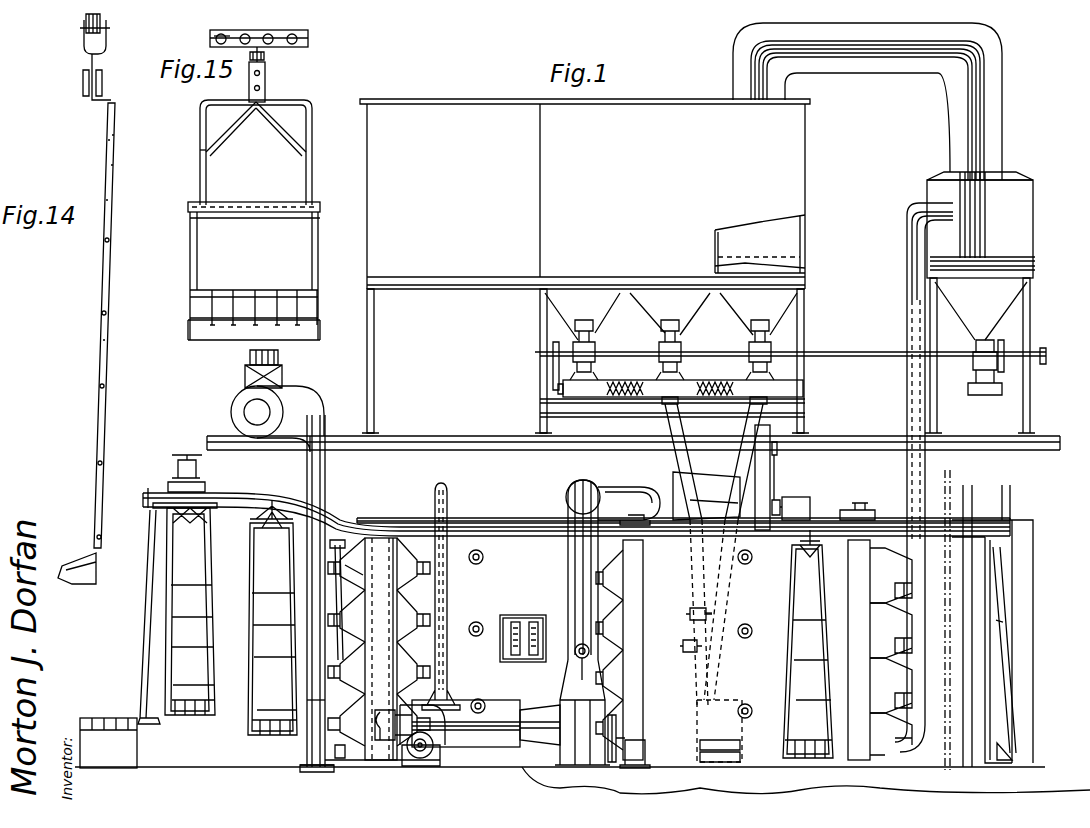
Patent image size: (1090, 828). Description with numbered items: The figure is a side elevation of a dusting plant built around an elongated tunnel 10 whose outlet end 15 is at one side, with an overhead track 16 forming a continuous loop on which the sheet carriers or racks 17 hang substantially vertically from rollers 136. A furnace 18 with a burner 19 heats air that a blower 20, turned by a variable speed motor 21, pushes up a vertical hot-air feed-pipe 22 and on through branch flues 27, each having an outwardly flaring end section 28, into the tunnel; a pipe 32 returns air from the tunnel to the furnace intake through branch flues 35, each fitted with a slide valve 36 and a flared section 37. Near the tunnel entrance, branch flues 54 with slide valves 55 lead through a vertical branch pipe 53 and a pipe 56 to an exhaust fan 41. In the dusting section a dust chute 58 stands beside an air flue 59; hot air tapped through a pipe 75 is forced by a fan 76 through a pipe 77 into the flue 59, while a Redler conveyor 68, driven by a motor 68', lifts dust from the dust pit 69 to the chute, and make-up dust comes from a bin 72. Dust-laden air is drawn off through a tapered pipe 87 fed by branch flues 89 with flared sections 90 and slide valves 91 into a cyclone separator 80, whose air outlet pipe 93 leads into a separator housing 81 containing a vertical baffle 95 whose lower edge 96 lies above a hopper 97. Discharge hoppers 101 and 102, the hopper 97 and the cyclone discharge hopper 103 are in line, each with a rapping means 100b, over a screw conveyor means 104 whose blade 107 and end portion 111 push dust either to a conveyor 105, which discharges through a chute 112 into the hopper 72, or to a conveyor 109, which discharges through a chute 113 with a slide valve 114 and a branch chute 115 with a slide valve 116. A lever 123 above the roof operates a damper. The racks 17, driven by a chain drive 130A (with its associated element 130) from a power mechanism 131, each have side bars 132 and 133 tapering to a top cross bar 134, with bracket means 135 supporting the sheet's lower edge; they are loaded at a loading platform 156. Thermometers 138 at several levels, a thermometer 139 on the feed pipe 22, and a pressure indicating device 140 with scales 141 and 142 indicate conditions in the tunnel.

In FIG. 1, the tunnel 10 is at (397, 518).
In FIG. 1, the outlet end 15 is at (1008, 560).
In FIG. 14, the overhead track 16 is at (96, 40).
In FIG. 15, the overhead track 16 is at (278, 48).
In FIG. 1, the overhead track 16 is at (503, 521).
In FIG. 14, the sheet carrier 17 is at (96, 281).
In FIG. 15, the sheet carrier 17 is at (194, 187).
In FIG. 1, the sheet carrier 17 is at (144, 636).
In FIG. 1, the furnace 18 is at (497, 708).
In FIG. 1, the burner 19 is at (445, 745).
In FIG. 1, the blower 20 is at (560, 753).
In FIG. 1, the variable speed motor 21 is at (632, 742).
In FIG. 1, the vertical hot-air feed-pipe 22 is at (572, 520).
In FIG. 1, the branch flue 27 is at (610, 604).
In FIG. 1, the end section 28 is at (610, 662).
In FIG. 1, the pipe 32 is at (433, 506).
In FIG. 1, the branch flue 35 is at (425, 676).
In FIG. 1, the slide valve 36 is at (428, 562).
In FIG. 1, the flared section 37 is at (410, 618).
In FIG. 1, the exhaust fan 41 is at (232, 403).
In FIG. 1, the vertical branch pipe 53 is at (307, 760).
In FIG. 1, the branch flue 54 is at (388, 740).
In FIG. 1, the slide valve 55 is at (307, 738).
In FIG. 1, the pipe 56 is at (326, 463).
In FIG. 1, the dust chute 58 is at (770, 480).
In FIG. 1, the air flue 59 is at (738, 500).
In FIG. 1, the Redler conveyor 68 is at (777, 477).
In FIG. 1, the motor 68' is at (808, 500).
In FIG. 1, the dust pit 69 is at (832, 782).
In FIG. 1, the bin 72 is at (735, 708).
In FIG. 1, the pipe 75 is at (600, 483).
In FIG. 1, the fan 76 is at (640, 486).
In FIG. 1, the pipe 77 is at (710, 476).
In FIG. 1, the cyclone separator 80 is at (1025, 196).
In FIG. 1, the separator housing 81 is at (640, 99).
In FIG. 1, the pipe 87 is at (926, 466).
In FIG. 1, the branch flue 89 is at (892, 648).
In FIG. 1, the flared section 90 is at (884, 580).
In FIG. 1, the slide valve 91 is at (898, 695).
In FIG. 1, the air outlet pipe 93 is at (853, 70).
In FIG. 1, the vertical baffle 95 is at (790, 233).
In FIG. 1, the lower edge 96 is at (805, 270).
In FIG. 1, the hopper 97 is at (790, 300).
In FIG. 1, the rapping means 100b is at (594, 336).
In FIG. 1, the discharge hopper 101 is at (676, 310).
In FIG. 1, the discharge hopper 102 is at (545, 300).
In FIG. 1, the cyclone discharge hopper 103 is at (1010, 288).
In FIG. 1, the screw conveyor means 104 is at (870, 357).
In FIG. 1, the conveyor 105 is at (758, 397).
In FIG. 1, the blade 107 is at (712, 378).
In FIG. 1, the conveyor 109 is at (663, 406).
In FIG. 1, the end portion 111 is at (624, 378).
In FIG. 1, the chute 112 is at (744, 428).
In FIG. 1, the chute 113 is at (675, 465).
In FIG. 1, the slide valve 114 is at (714, 613).
In FIG. 1, the branch chute 115 is at (688, 614).
In FIG. 1, the slide valve 116 is at (684, 652).
In FIG. 1, the lever 123 is at (864, 504).
In FIG. 14, the trolley 130 is at (84, 36).
In FIG. 15, the trolley 130 is at (258, 32).
In FIG. 15, the chain drive 130A is at (218, 36).
In FIG. 1, the power mechanism 131 is at (165, 468).
In FIG. 15, the side bar 132 is at (197, 244).
In FIG. 14, the side bar 133 is at (98, 372).
In FIG. 15, the side bar 133 is at (312, 250).
In FIG. 14, the top cross bar 134 is at (111, 103).
In FIG. 15, the top cross bar 134 is at (287, 104).
In FIG. 14, the bracket means 135 is at (70, 558).
In FIG. 15, the bracket means 135 is at (200, 318).
In FIG. 1, the rollers 136 is at (143, 678).
In FIG. 1, the thermometer 138 is at (478, 556).
In FIG. 1, the thermometer 139 is at (575, 655).
In FIG. 1, the pressure indicating device 140 is at (514, 662).
In FIG. 1, the scale 141 is at (514, 620).
In FIG. 1, the scale 142 is at (534, 620).
In FIG. 1, the loading platform 156 is at (116, 709).